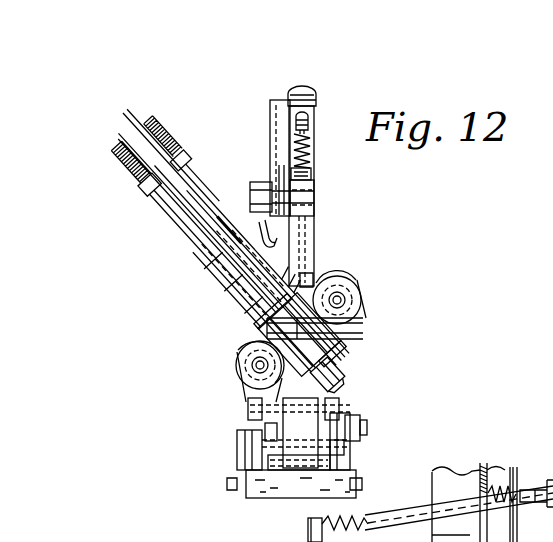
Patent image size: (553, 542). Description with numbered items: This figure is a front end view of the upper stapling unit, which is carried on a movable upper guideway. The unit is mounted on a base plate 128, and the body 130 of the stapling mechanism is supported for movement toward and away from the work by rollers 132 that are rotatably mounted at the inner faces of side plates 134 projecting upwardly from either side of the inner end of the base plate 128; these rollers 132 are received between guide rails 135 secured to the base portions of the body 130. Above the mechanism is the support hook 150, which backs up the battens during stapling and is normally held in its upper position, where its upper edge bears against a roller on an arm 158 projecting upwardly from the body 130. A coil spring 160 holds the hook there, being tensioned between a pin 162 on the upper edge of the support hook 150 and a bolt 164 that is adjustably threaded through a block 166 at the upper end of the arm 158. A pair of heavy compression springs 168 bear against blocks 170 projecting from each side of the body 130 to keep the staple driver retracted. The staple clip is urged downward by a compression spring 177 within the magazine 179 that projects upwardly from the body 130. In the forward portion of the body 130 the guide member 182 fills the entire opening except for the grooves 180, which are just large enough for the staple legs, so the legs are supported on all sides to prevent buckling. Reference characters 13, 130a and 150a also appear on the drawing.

The tubular arm / bolt 13 is at (224, 243).
The base plate 128 is at (258, 492).
The body 130 is at (299, 335).
The slide bar end 130a is at (300, 335).
The rollers 132 is at (356, 432).
The side plates 134 is at (248, 470).
The guide rails 135 is at (268, 408).
The support hook 150 is at (314, 242).
The housing portion 150a is at (451, 534).
The arm 158 is at (270, 137).
The coil spring 160 is at (312, 153).
The pin 162 is at (312, 177).
The bolt 164 is at (316, 97).
The block 166 is at (309, 119).
The compression springs 168 is at (247, 354).
The blocks 170 is at (238, 358).
The compression spring 177 is at (166, 174).
The magazine 179 is at (508, 467).
The grooves 180 is at (350, 330).
The guide member 182 is at (329, 376).